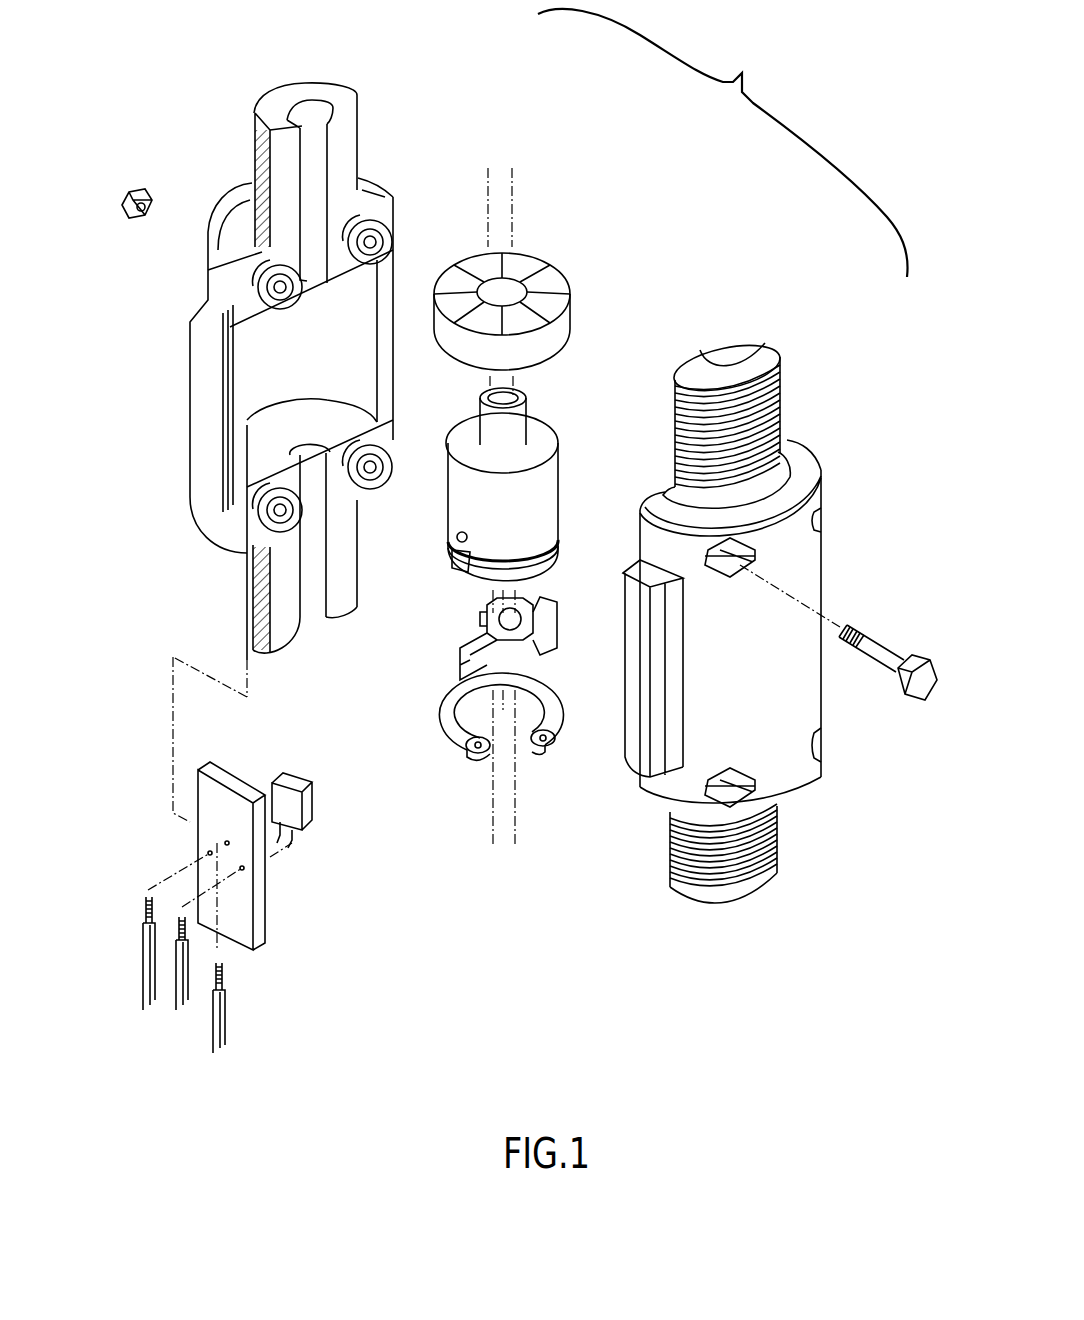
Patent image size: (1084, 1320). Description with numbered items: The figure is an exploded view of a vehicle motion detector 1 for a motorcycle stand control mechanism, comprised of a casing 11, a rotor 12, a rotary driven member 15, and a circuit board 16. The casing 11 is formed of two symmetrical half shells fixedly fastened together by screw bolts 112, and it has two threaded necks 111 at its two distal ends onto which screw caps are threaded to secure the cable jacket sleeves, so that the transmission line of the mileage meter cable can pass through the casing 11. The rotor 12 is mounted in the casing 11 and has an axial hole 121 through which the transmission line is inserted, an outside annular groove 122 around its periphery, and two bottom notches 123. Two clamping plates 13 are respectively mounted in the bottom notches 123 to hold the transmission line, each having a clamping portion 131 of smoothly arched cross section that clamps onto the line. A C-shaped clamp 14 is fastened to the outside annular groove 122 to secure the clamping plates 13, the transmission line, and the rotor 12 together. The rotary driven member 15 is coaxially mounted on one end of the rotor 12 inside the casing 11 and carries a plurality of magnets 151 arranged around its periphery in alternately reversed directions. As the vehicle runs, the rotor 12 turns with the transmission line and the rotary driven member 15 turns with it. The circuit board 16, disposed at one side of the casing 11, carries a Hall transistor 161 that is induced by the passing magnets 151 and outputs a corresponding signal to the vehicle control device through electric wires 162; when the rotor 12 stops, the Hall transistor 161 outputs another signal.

The vehicle motion detector 1 is at (723, 143).
The casing 11 is at (198, 243).
The threaded necks 111 is at (257, 150).
The screw bolts 112 is at (877, 653).
The rotor 12 is at (504, 469).
The axial hole 121 is at (520, 391).
The outside annular groove 122 is at (555, 537).
The bottom notches 123 is at (452, 542).
The clamping plates 13 is at (553, 607).
The clamping portion 131 is at (481, 633).
The C-shaped clamp 14 is at (468, 752).
The rotary driven member 15 is at (523, 253).
The magnets 151 is at (571, 282).
The circuit board 16 is at (257, 932).
The Hall transistor 161 is at (307, 813).
The electric wires 162 is at (212, 1055).